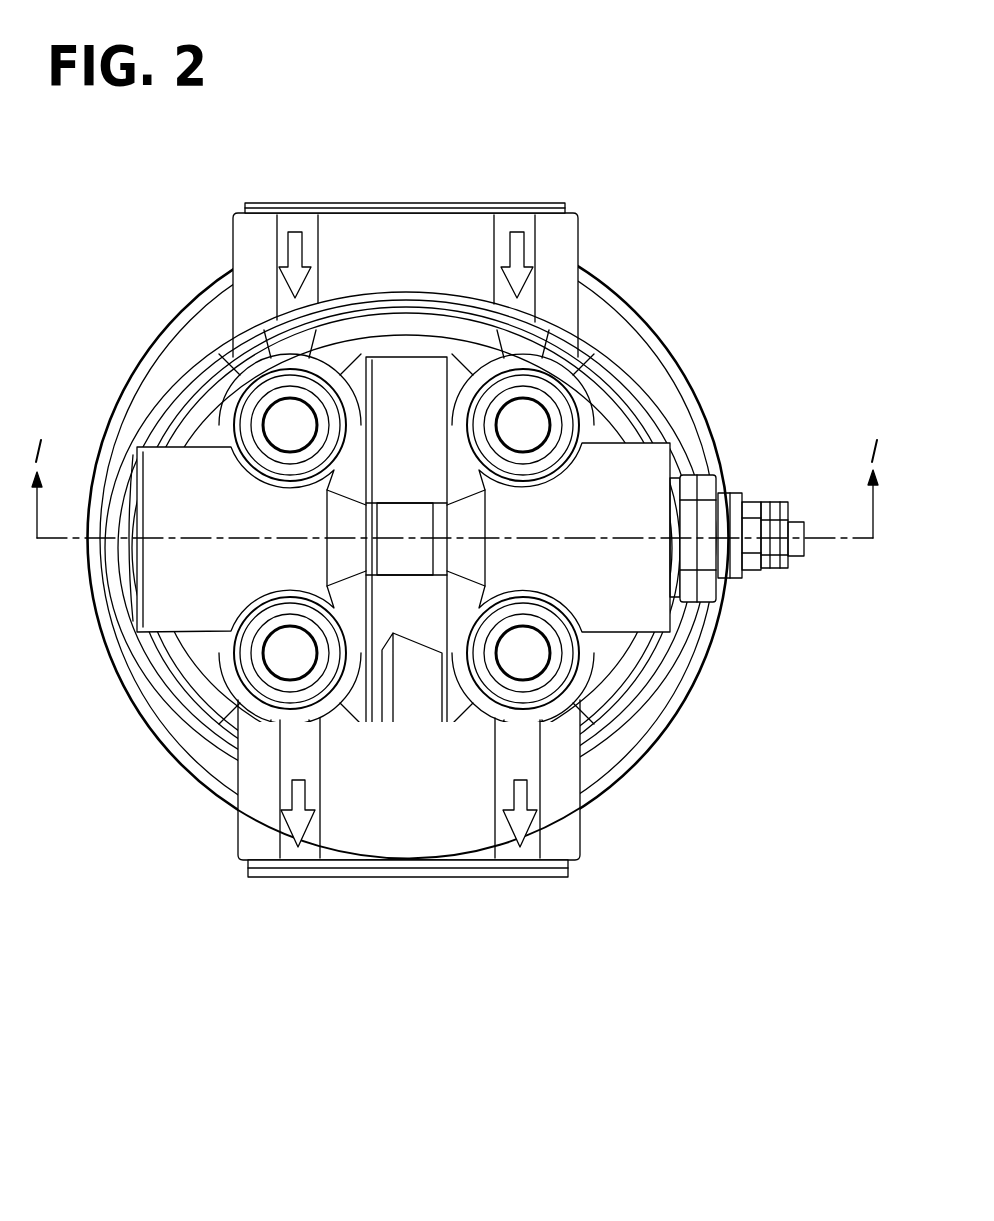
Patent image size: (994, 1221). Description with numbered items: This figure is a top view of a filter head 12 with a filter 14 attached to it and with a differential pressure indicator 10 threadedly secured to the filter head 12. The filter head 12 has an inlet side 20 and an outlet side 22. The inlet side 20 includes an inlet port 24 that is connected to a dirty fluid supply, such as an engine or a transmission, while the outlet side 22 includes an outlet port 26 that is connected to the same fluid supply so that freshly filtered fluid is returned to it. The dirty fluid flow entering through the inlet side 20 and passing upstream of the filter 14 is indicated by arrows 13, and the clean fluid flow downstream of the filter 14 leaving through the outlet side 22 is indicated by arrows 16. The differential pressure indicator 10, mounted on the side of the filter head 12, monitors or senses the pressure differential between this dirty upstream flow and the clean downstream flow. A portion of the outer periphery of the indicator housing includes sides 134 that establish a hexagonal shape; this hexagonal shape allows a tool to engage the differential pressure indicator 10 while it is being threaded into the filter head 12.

The differential pressure indicator 10 is at (808, 563).
The filter head 12 is at (580, 270).
The arrows indicating dirty fluid flow 13 is at (287, 247).
The filter 14 is at (663, 347).
The arrows indicating clean fluid flow 16 is at (288, 830).
The inlet side 20 is at (486, 203).
The outlet side 22 is at (488, 877).
The inlet port 24 is at (433, 108).
The outlet port 26 is at (437, 968).
The sides 134 is at (697, 483).